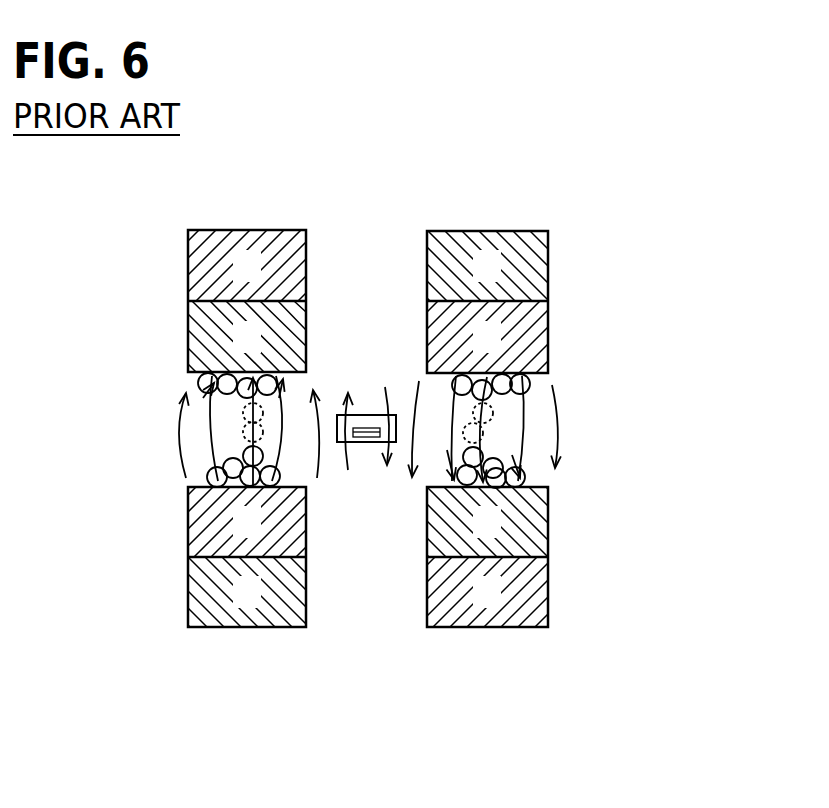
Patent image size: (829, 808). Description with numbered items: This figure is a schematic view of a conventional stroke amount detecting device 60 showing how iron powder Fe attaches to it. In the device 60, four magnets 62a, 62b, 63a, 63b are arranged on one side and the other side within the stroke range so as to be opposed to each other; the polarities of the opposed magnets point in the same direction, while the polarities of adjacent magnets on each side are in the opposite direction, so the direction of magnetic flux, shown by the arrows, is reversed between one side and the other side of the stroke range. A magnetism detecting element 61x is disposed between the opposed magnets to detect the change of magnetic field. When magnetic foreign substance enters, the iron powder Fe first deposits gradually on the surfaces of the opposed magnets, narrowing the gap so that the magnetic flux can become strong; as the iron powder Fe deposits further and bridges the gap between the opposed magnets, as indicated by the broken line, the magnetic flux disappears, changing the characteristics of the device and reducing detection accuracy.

The device 60 is at (683, 258).
The magnetism detecting element 61x is at (363, 443).
The magnet 62a is at (188, 585).
The magnet 62b is at (548, 600).
The magnet 63a is at (188, 251).
The magnet 63b is at (548, 253).
The iron powder Fe is at (216, 386).